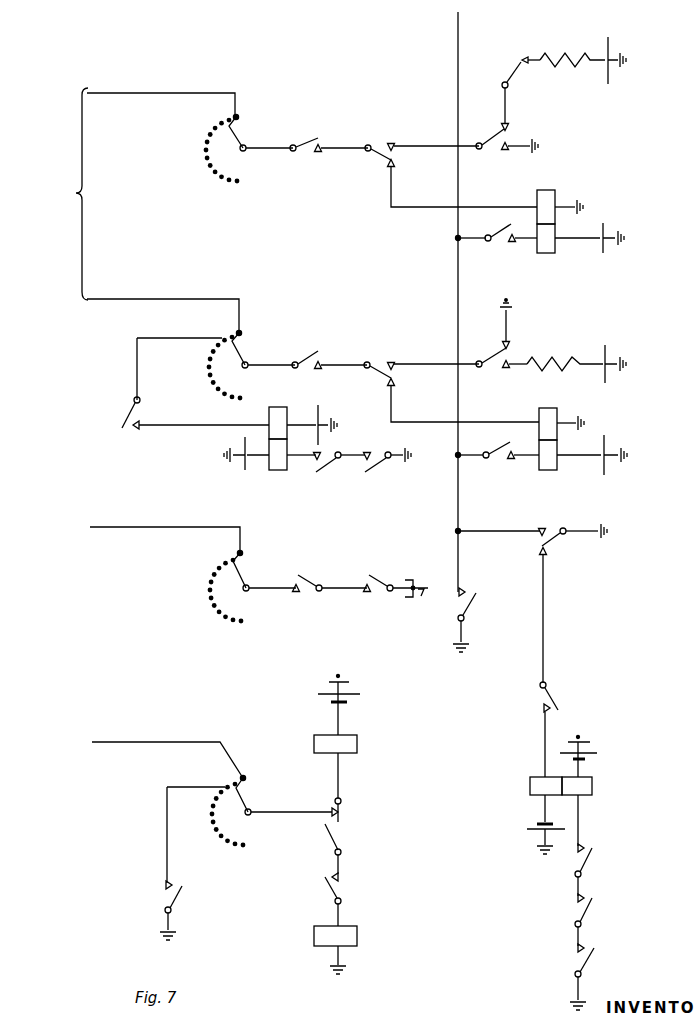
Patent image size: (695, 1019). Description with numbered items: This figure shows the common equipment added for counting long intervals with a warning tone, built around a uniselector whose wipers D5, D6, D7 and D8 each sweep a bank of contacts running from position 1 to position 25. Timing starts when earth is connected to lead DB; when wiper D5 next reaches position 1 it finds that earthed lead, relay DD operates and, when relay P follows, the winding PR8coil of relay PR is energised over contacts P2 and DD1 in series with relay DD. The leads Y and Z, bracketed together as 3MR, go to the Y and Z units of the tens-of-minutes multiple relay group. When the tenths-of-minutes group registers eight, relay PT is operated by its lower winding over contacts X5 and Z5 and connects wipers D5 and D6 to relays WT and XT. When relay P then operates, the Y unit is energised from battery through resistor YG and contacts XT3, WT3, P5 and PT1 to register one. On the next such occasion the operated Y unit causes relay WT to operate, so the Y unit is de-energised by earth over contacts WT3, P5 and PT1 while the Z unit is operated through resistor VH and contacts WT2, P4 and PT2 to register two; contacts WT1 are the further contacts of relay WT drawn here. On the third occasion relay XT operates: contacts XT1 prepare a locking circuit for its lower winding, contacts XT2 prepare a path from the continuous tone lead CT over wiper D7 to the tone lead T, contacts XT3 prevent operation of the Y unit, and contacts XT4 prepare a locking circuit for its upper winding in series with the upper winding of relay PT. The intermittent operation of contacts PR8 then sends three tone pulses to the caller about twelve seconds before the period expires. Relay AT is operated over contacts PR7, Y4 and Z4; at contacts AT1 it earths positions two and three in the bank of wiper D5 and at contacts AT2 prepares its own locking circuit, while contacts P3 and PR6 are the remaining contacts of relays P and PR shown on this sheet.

The position 1 is at (249, 448).
The contact position 25 is at (255, 513).
The 3MR' leads 3MR is at (61, 194).
The Y unit Y is at (161, 94).
The Z unit Z is at (163, 305).
The tone lead T is at (165, 528).
The lead DB is at (167, 749).
The wiper D5 is at (225, 148).
The wiper D6 is at (227, 365).
The wiper D7 is at (228, 586).
The stepping switch D8 is at (230, 811).
The contacts PT1 is at (306, 135).
The contacts PT2 is at (269, 491).
The contacts P5 is at (445, 176).
The contacts P4 is at (451, 380).
The contact P3 is at (573, 539).
The contacts P2 is at (321, 849).
The contacts XT3 is at (509, 92).
The contacts XT4 is at (178, 415).
The contacts XT1 is at (564, 496).
The contacts XT2 is at (394, 575).
The resistor YG is at (583, 59).
The resistor VH is at (576, 361).
The contacts WT3 is at (566, 274).
The contact WT1 is at (541, 241).
The contacts WT2 is at (501, 343).
The contacts X5 is at (326, 466).
The contacts Z5 is at (388, 464).
The contacts PR8 is at (328, 575).
The relay PR winding PR8coil is at (390, 939).
The continuous tone lead CT is at (415, 597).
The contacts AT1 is at (155, 910).
The contacts AT2 is at (620, 786).
The contact DD1 and relay DD/1 DD1 is at (390, 748).
The contact PR6 is at (479, 620).
The contacts PR7 is at (596, 977).
The contacts Y4 is at (593, 870).
The contacts Z4 is at (593, 920).